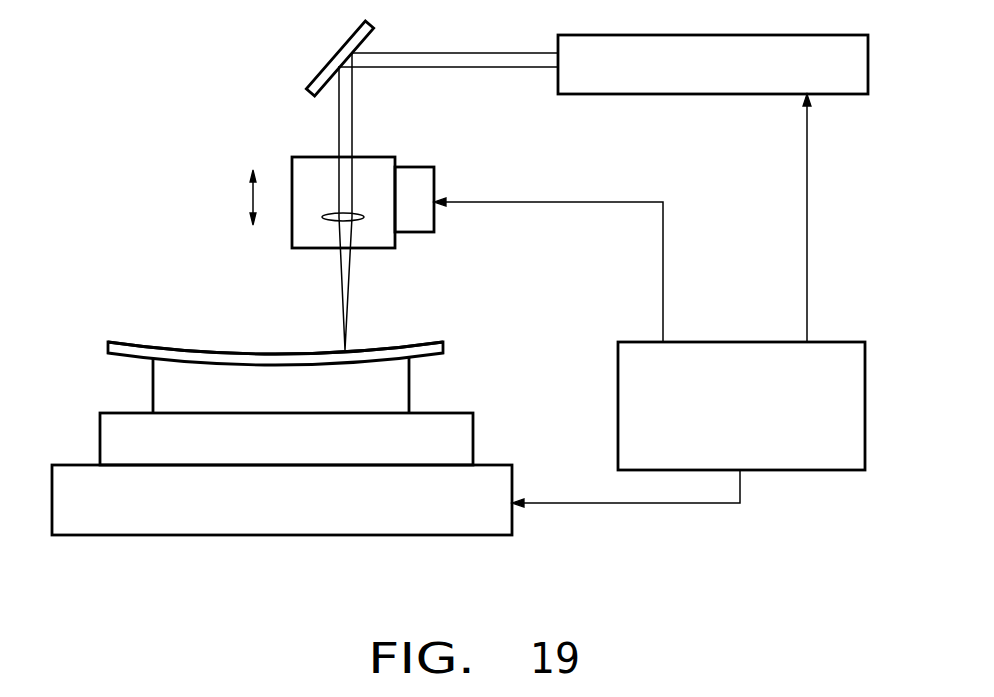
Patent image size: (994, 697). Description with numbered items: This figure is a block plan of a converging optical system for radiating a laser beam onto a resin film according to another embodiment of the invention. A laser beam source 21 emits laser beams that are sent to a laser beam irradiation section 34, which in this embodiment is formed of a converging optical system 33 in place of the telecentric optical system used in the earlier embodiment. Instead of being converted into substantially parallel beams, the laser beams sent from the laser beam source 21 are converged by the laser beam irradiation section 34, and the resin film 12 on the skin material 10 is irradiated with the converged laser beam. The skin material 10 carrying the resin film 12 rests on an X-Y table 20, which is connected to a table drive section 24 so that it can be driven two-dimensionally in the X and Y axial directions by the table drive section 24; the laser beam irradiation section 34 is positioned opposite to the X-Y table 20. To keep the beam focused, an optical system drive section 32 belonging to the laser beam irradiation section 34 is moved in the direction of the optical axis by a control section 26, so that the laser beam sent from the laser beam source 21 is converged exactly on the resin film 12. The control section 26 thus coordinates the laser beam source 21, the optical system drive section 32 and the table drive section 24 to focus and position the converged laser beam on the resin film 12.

The skin material 10 is at (443, 345).
The resin film 12 is at (425, 338).
The X-Y table 20 is at (409, 390).
The laser beam source 21 is at (620, 95).
The table drive section 24 is at (500, 473).
The control section 26 is at (740, 362).
The optical system drive section 32 is at (436, 177).
The converging optical system 33 is at (324, 217).
The laser beam irradiation section 34 is at (385, 157).